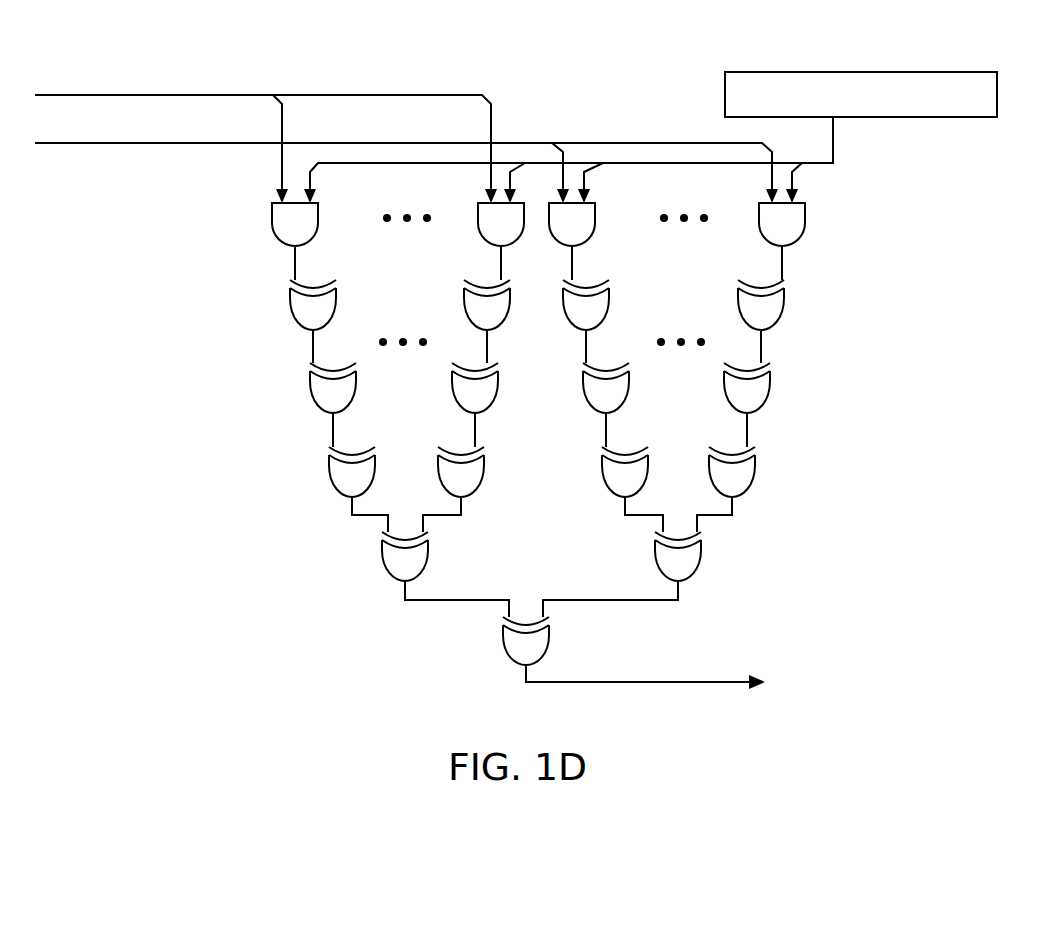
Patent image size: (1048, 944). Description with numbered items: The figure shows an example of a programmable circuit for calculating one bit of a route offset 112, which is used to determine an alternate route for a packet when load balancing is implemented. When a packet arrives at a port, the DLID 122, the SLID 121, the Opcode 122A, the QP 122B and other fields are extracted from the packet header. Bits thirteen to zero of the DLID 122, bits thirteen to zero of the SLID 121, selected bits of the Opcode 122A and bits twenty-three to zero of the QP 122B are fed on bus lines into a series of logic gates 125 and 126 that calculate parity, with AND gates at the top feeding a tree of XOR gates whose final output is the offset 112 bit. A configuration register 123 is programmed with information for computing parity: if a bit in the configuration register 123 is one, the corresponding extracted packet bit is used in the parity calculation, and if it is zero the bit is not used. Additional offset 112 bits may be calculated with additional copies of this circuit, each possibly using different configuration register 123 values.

The route offset 112 is at (707, 652).
The SLID 121 is at (72, 94).
The DLID 122 is at (130, 145).
The Opcode 122A is at (289, 57).
The QP 122B is at (436, 54).
The configuration register 123 is at (788, 72).
The logic gates 125 is at (766, 365).
The logic gates 126 is at (293, 308).